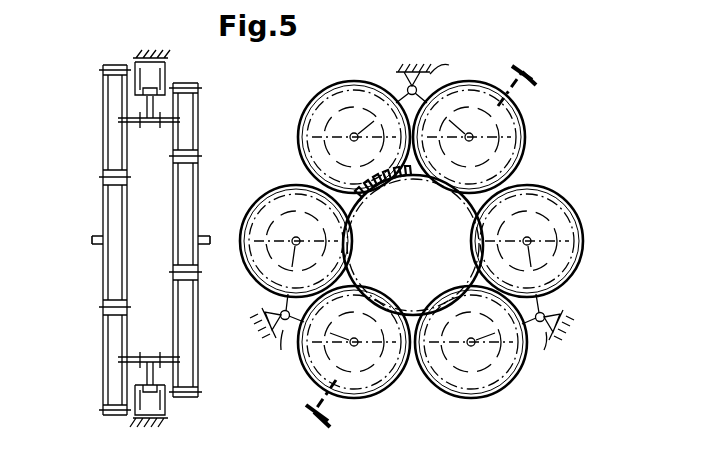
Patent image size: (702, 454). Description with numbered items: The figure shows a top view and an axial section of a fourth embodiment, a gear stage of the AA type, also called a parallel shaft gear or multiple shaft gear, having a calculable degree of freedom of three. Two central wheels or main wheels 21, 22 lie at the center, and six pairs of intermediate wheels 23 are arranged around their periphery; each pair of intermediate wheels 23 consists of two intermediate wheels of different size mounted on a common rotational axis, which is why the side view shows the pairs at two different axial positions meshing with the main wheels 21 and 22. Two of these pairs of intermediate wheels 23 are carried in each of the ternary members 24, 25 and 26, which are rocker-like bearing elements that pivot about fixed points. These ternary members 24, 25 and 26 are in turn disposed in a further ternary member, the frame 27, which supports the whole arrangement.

The central wheel 21 is at (112, 243).
The central wheel 22 is at (188, 242).
The intermediate wheels 23 is at (115, 140).
The ternary member 24 is at (280, 313).
The ternary member 25 is at (398, 103).
The ternary member 26 is at (548, 306).
The frame 27 is at (413, 215).